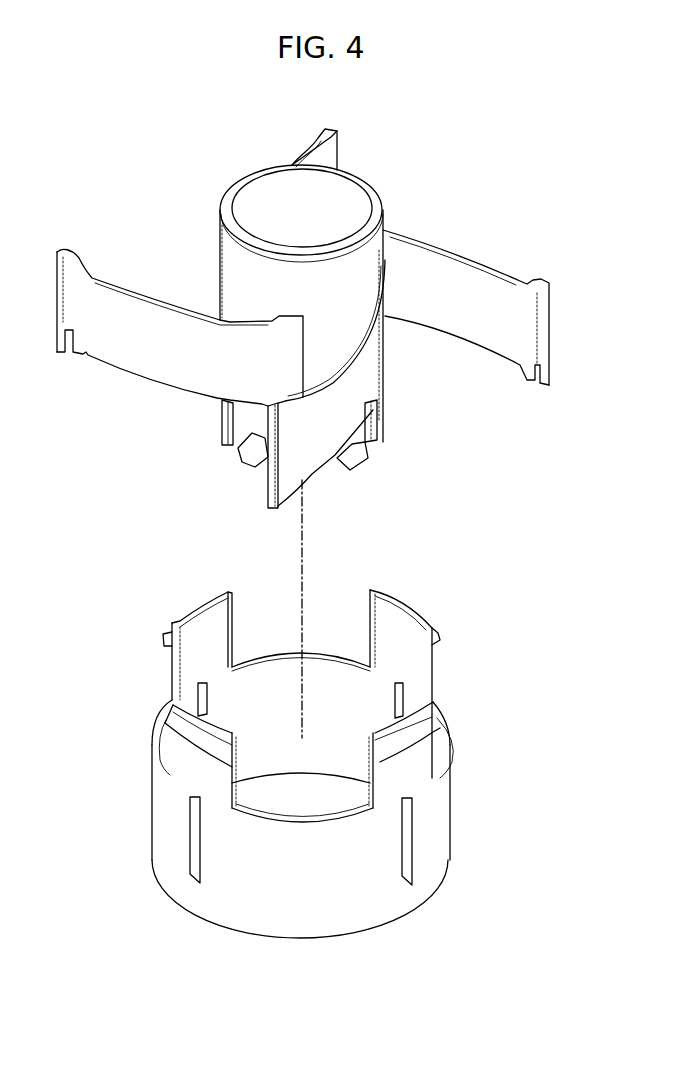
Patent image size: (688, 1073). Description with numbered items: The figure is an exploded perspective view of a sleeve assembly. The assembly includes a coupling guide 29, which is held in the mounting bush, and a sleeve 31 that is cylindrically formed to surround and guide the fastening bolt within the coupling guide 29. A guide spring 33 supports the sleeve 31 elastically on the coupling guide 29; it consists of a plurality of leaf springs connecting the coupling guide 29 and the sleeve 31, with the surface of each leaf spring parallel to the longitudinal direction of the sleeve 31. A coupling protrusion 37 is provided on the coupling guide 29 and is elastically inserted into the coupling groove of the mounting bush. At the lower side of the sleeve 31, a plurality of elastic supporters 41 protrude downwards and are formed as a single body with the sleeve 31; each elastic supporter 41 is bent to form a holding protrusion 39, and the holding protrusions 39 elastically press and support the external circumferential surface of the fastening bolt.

The coupling guide 29 is at (437, 817).
The sleeve 31 is at (365, 188).
The guide spring 33 is at (133, 305).
The coupling protrusion 37 is at (432, 643).
The holding protrusion 39 is at (225, 440).
The elastic supporter 41 is at (258, 453).